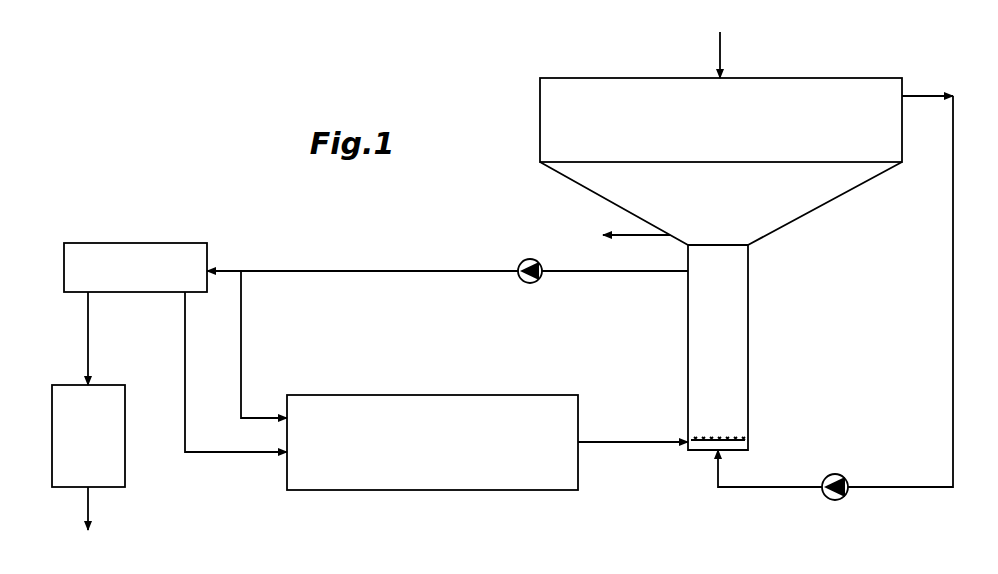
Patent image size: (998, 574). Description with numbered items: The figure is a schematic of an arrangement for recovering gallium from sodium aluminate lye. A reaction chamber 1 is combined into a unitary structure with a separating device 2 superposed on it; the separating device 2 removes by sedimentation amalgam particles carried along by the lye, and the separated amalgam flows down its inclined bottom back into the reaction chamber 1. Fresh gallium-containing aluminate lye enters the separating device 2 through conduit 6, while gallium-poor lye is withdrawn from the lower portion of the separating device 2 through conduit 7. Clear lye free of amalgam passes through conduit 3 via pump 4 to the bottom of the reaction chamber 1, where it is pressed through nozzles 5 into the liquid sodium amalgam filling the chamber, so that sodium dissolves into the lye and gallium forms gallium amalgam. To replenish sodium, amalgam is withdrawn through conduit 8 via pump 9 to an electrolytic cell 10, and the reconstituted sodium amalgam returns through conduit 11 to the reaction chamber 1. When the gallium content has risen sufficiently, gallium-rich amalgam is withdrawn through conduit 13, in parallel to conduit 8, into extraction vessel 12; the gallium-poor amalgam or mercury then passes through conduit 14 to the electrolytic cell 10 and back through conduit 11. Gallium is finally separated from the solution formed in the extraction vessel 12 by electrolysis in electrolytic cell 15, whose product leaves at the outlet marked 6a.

The reaction chamber 1 is at (718, 347).
The separating device 2 is at (721, 161).
The conduit 3 is at (955, 185).
The pump 4 is at (783, 475).
The nozzles 5 is at (718, 423).
The conduit 6 is at (719, 42).
The product outlet 6a is at (72, 554).
The conduit 7 is at (626, 238).
The conduit 8 is at (621, 277).
The pump 9 is at (530, 257).
The electrolytic cell 10 is at (432, 442).
The conduit 11 is at (628, 445).
The extraction vessel 12 is at (135, 267).
The conduit 13 is at (226, 265).
The conduit 14 is at (208, 453).
The electrolytic cell 15 is at (88, 411).